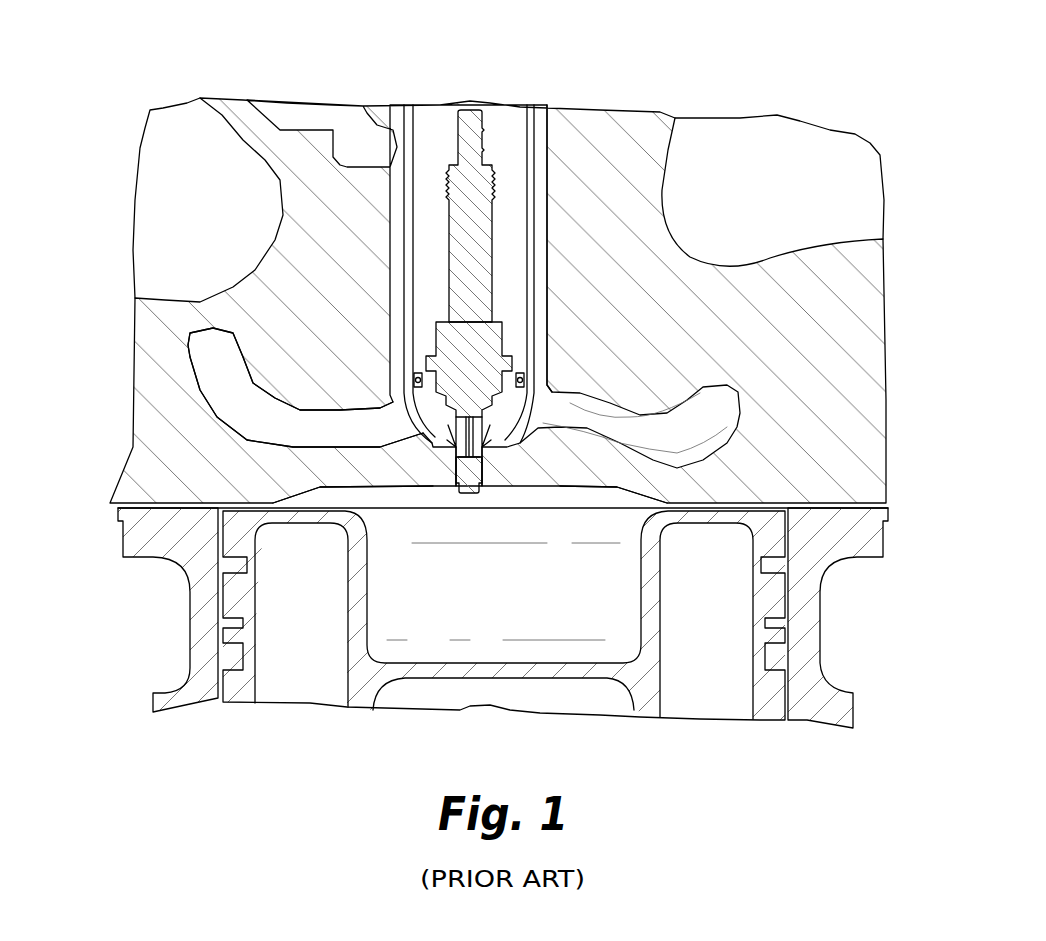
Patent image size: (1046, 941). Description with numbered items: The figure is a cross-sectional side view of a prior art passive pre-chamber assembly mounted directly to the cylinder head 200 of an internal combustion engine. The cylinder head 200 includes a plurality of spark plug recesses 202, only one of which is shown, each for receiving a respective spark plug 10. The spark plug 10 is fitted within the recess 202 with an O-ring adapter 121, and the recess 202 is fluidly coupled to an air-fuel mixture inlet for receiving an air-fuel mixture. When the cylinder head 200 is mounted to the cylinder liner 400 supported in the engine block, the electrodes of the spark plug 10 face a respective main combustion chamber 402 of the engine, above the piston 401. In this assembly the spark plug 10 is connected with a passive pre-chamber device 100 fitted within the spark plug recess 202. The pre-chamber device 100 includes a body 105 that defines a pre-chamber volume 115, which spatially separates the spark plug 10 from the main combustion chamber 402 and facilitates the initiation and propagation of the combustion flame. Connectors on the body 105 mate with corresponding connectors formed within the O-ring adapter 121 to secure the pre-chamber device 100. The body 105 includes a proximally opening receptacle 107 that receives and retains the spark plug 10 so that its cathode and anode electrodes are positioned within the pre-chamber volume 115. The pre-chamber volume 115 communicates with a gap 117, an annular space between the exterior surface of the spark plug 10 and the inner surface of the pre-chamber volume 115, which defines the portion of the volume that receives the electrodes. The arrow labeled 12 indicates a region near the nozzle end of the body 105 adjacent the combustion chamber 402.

The spark plug 10 is at (452, 247).
The injector nozzle 12 is at (450, 438).
The passive pre-chamber device 100 is at (432, 466).
The body 105 is at (393, 300).
The receptacle 107 is at (556, 336).
The pre-chamber volume 115 is at (468, 495).
The gap 117 is at (515, 446).
The O-ring adapter 121 is at (532, 127).
The cylinder head 200 is at (777, 338).
The spark plug recess 202 is at (498, 145).
The cylinder liner 400 is at (837, 708).
The piston 401 is at (650, 715).
The main combustion chamber 402 is at (487, 608).